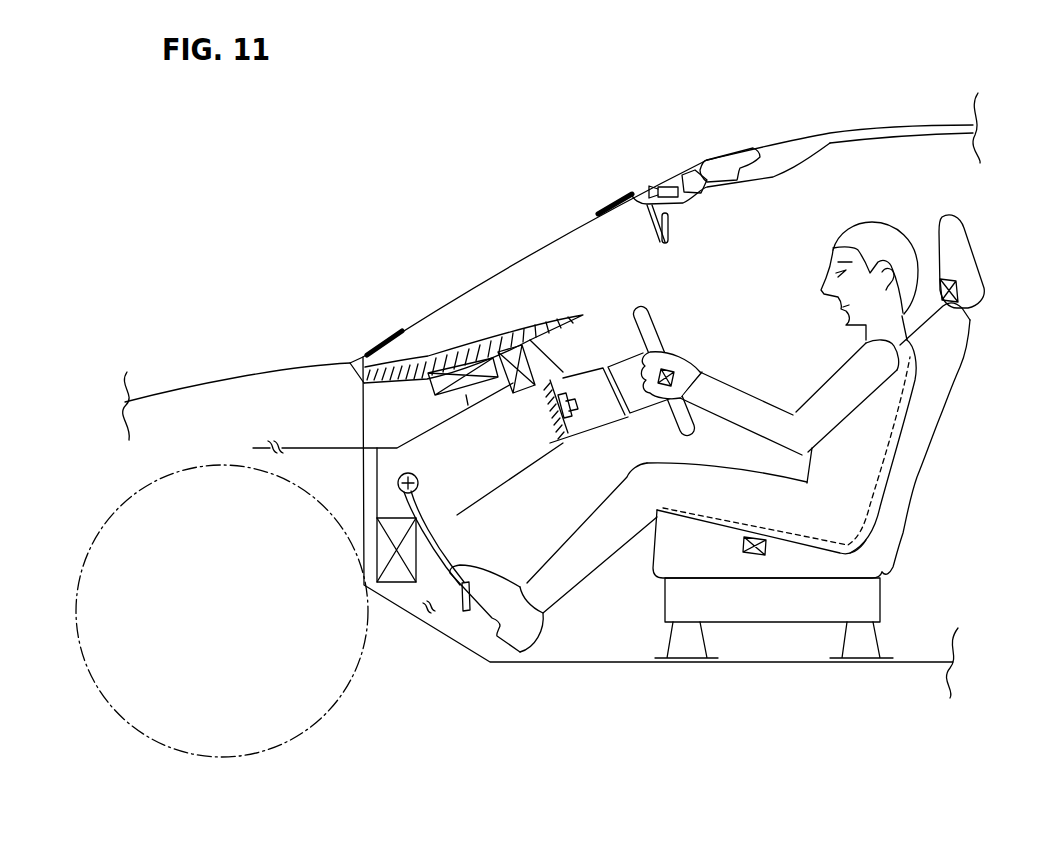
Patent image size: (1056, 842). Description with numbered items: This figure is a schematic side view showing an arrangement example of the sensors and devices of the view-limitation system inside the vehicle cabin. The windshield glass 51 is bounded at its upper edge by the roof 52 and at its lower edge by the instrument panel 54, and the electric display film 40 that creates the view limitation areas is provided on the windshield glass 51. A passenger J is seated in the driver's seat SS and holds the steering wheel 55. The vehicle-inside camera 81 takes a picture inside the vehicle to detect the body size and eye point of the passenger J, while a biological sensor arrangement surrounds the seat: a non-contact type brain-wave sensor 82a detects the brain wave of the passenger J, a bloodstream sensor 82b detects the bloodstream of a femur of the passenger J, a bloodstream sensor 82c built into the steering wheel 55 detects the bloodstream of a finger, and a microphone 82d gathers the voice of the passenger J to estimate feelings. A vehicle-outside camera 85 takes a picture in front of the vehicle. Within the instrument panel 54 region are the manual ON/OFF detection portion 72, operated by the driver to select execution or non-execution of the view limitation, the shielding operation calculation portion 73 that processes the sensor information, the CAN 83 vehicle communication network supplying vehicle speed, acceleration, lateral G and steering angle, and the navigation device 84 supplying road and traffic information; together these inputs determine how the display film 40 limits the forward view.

The electric display film 40 is at (412, 322).
The windshield glass 51 is at (556, 238).
The roof 52 is at (785, 138).
The instrument panel 54 is at (483, 346).
The steering wheel 55 is at (649, 319).
The manual ON/OFF detection portion 72 is at (578, 410).
The shielding operation calculation portion 73 is at (462, 366).
The vehicle-inside camera 81 is at (674, 177).
The non-contact type brain-wave sensor 82a is at (958, 286).
The bloodstream sensor 82b is at (750, 556).
The bloodstream sensor 82c is at (678, 368).
The microphone 82d is at (597, 370).
The CAN 83 is at (396, 583).
The navigation device 84 is at (513, 346).
The vehicle-outside camera 85 is at (666, 186).
The passenger J is at (872, 422).
The driver's seat SS is at (920, 539).